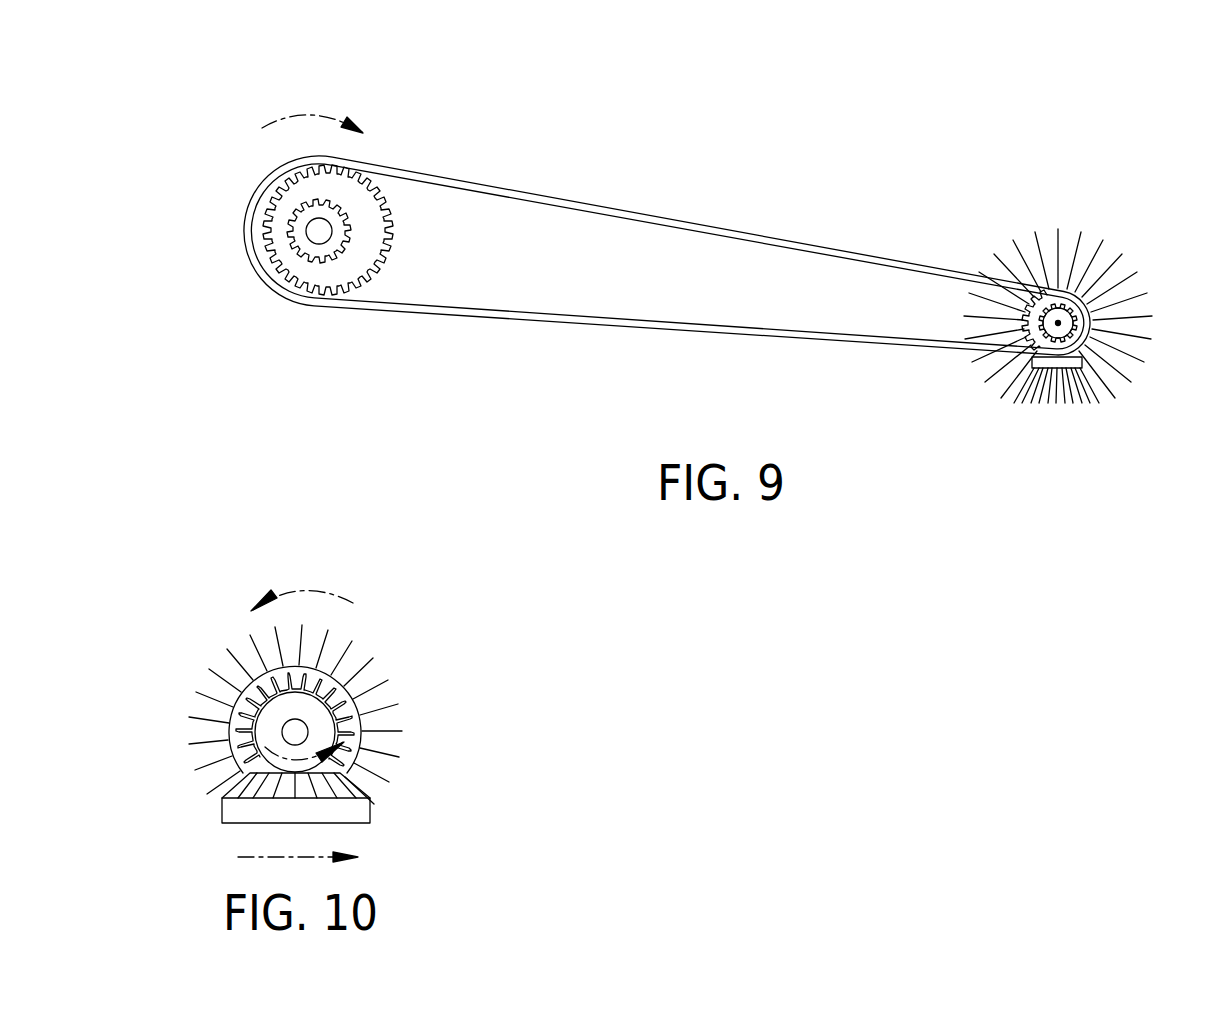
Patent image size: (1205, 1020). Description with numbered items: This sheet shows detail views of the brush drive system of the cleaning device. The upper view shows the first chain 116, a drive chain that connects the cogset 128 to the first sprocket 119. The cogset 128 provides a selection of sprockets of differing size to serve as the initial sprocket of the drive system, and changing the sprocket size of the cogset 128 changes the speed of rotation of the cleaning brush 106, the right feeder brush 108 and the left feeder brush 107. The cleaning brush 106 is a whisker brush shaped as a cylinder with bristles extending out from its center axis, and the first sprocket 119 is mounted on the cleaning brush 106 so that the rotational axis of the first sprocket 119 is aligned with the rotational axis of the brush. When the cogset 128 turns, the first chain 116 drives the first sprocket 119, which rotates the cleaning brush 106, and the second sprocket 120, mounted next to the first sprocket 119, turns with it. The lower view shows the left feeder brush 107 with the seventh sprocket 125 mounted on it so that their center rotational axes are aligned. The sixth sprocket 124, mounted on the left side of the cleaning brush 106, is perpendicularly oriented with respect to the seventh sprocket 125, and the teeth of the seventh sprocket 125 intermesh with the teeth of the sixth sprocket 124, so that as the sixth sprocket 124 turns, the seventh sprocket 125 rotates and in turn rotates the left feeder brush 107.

In FIG. 9, the cogset 128 is at (318, 230).
In FIG. 9, the first chain 116 is at (667, 226).
In FIG. 9, the cleaning brush 106 is at (1059, 242).
In FIG. 9, the first sprocket 119 is at (1005, 383).
In FIG. 9, the right feeder brush 108 is at (1057, 400).
In FIG. 9, the second sprocket 120 is at (1123, 380).
In FIG. 10, the left feeder brush 107 is at (223, 705).
In FIG. 10, the seventh sprocket 125 is at (327, 720).
In FIG. 10, the sixth sprocket 124 is at (358, 804).